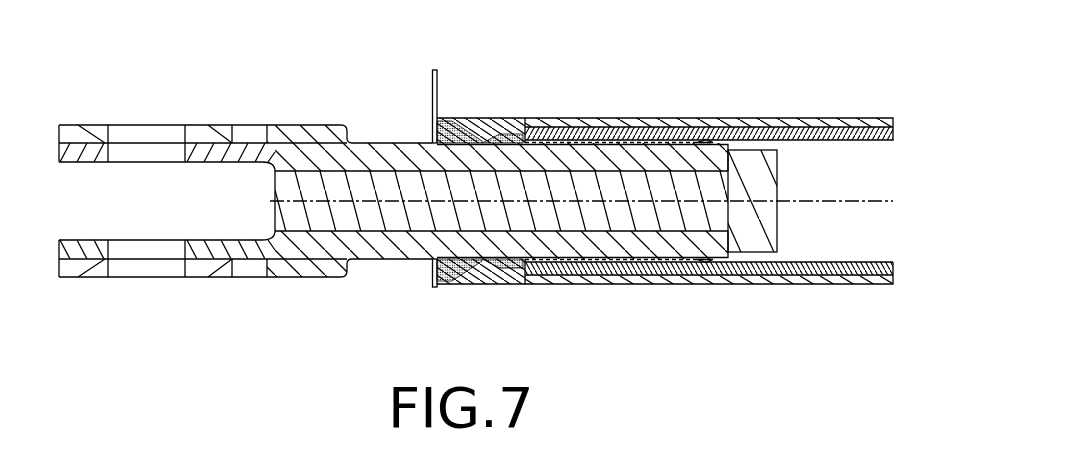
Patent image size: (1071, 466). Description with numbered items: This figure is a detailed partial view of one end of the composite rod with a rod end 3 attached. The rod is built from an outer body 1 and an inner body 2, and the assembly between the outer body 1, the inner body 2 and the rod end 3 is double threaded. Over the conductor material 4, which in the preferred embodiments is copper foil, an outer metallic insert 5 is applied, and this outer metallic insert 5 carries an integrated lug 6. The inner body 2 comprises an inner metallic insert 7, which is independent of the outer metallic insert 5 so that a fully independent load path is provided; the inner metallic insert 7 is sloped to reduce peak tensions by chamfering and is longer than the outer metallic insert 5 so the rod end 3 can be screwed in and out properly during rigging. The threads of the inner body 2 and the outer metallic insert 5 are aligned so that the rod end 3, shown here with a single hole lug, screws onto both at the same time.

The outer body 1 is at (852, 280).
The inner body 2 is at (793, 268).
The rod end 3 is at (258, 270).
The conductor material 4 is at (812, 127).
The outer metallic insert 5 is at (520, 127).
The integrated lug 6 is at (430, 103).
The inner metallic insert 7 is at (541, 137).